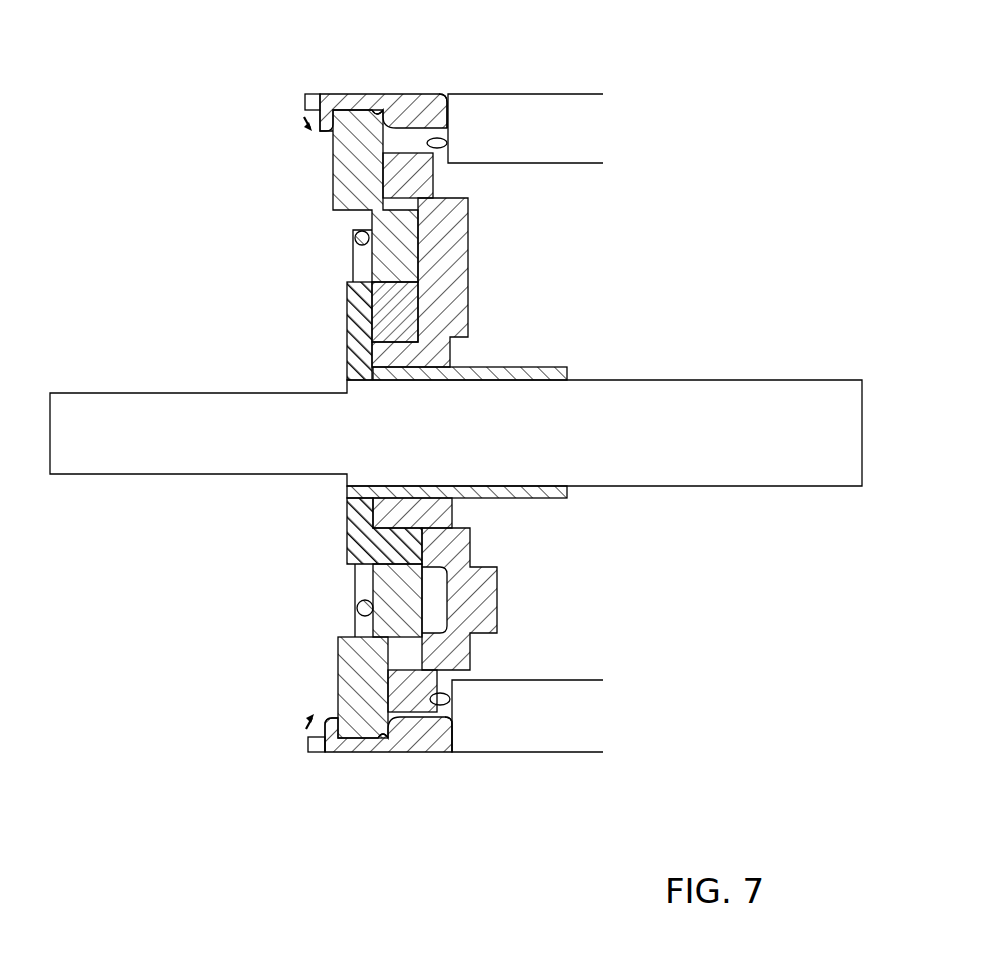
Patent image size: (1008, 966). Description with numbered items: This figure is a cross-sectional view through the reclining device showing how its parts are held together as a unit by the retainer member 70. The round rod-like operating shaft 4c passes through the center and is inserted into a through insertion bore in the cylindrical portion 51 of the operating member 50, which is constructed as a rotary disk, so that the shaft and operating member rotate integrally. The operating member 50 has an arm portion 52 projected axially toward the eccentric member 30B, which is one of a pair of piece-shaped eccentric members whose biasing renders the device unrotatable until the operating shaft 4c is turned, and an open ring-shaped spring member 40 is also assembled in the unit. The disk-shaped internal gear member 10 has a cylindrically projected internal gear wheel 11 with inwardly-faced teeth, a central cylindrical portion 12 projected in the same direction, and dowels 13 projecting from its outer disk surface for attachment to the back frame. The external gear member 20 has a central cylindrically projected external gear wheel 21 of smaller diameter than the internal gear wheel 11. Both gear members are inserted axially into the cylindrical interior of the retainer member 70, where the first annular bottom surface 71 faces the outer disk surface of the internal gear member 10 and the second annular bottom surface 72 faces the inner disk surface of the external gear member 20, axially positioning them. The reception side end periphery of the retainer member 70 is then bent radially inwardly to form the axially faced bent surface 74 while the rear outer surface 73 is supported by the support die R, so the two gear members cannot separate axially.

The operating shaft 4c is at (172, 426).
The internal gear member 10 is at (434, 282).
The internal gear wheel 11 is at (408, 172).
The cylindrical portion 12 is at (397, 353).
The dowel 13 is at (462, 233).
The external gear member 20 is at (350, 188).
The external gear wheel 21 is at (390, 228).
The eccentric member 30B is at (388, 308).
The spring member 40 is at (363, 595).
The operating member 50 is at (353, 353).
The cylindrical portion 51 is at (538, 372).
The arm portion 52 is at (398, 543).
The retainer member 70 is at (432, 94).
The first annular bottom surface 71 is at (446, 142).
The second annular bottom surface 72 is at (377, 94).
The rear outer surface 73 is at (448, 117).
The bent surface 74 is at (340, 94).
The support die R is at (525, 94).